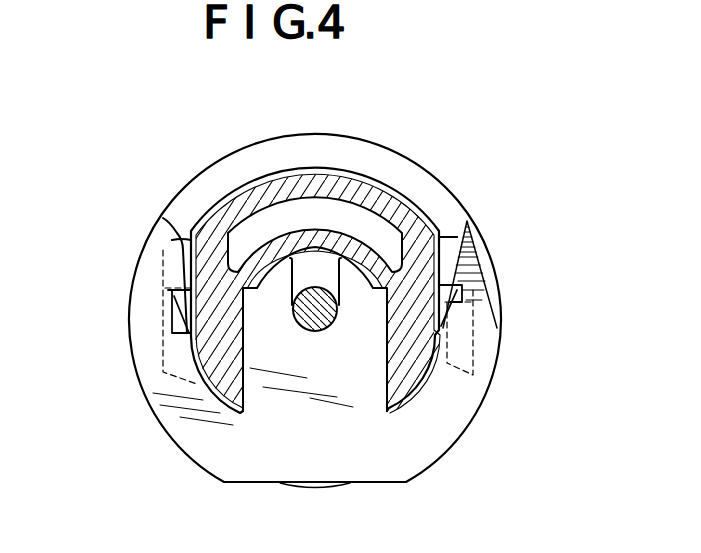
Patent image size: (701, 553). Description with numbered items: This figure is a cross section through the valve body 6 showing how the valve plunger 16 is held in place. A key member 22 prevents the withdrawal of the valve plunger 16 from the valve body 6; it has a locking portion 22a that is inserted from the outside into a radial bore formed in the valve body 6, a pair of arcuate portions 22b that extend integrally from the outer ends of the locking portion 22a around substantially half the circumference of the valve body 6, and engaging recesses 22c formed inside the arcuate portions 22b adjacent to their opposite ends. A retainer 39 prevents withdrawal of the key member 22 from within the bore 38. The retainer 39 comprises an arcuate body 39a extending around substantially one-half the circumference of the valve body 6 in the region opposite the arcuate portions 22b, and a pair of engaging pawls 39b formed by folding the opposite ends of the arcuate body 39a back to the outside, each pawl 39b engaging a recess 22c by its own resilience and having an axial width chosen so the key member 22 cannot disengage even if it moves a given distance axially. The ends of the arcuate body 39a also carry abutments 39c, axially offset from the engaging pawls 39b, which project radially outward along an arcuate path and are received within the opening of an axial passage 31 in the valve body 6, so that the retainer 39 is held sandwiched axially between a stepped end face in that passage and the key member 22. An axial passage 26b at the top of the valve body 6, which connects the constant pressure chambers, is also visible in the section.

The valve body 6 is at (410, 371).
The valve plunger 16 is at (321, 328).
The key member 22 is at (197, 467).
The locking portion 22a is at (350, 270).
The arcuate portions 22b is at (468, 224).
The engaging recesses 22c is at (168, 345).
The axial passage 26b is at (272, 206).
The axial passage 31 is at (170, 247).
The bore 38 is at (383, 361).
The retainer 39 is at (371, 168).
The arcuate body 39a is at (237, 189).
The engaging pawls 39b is at (165, 311).
The abutments 39c is at (163, 298).